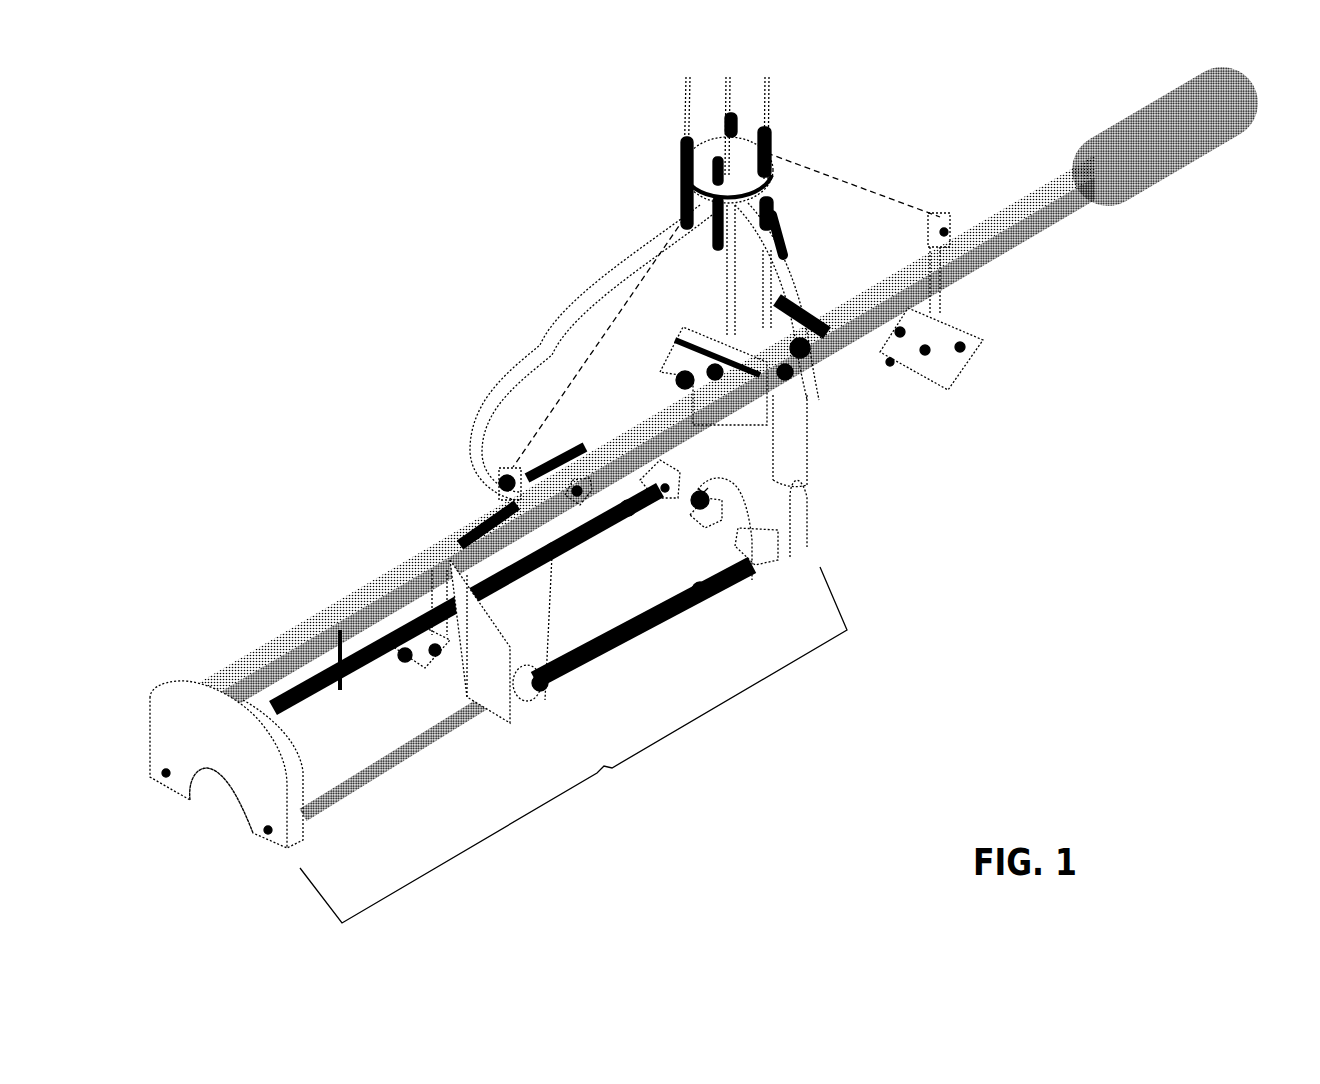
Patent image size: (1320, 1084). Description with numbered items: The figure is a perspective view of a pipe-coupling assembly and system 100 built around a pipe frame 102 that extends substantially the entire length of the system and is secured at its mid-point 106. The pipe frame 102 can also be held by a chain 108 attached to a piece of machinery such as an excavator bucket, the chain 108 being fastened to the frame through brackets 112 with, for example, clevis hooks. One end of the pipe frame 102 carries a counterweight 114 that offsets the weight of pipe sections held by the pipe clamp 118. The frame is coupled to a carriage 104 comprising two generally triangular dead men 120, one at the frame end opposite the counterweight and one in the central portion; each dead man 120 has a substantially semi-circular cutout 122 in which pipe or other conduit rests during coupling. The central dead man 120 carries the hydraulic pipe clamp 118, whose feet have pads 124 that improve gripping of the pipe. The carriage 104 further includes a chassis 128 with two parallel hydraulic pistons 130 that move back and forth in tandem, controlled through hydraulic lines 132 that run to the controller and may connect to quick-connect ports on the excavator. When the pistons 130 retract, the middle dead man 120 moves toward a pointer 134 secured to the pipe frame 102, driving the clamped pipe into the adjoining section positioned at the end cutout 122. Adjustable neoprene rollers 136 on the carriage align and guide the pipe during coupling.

The assembly and system 100 is at (305, 222).
The pipe frame 102 is at (276, 637).
The carriage 104 is at (604, 768).
The mid-point 106 is at (773, 417).
The chain 108 is at (850, 178).
The bracket 112 is at (508, 468).
The counterweight 114 is at (1175, 172).
The pipe clamp 118 is at (703, 493).
The dead man 120 is at (180, 681).
The semi-circular cutout 122 is at (225, 797).
The pad 124 is at (690, 523).
The chassis 128 is at (527, 685).
The hydraulic piston 130 is at (685, 598).
The hydraulic line 132 is at (530, 350).
The pointer 134 is at (768, 138).
The neoprene roller 136 is at (660, 383).